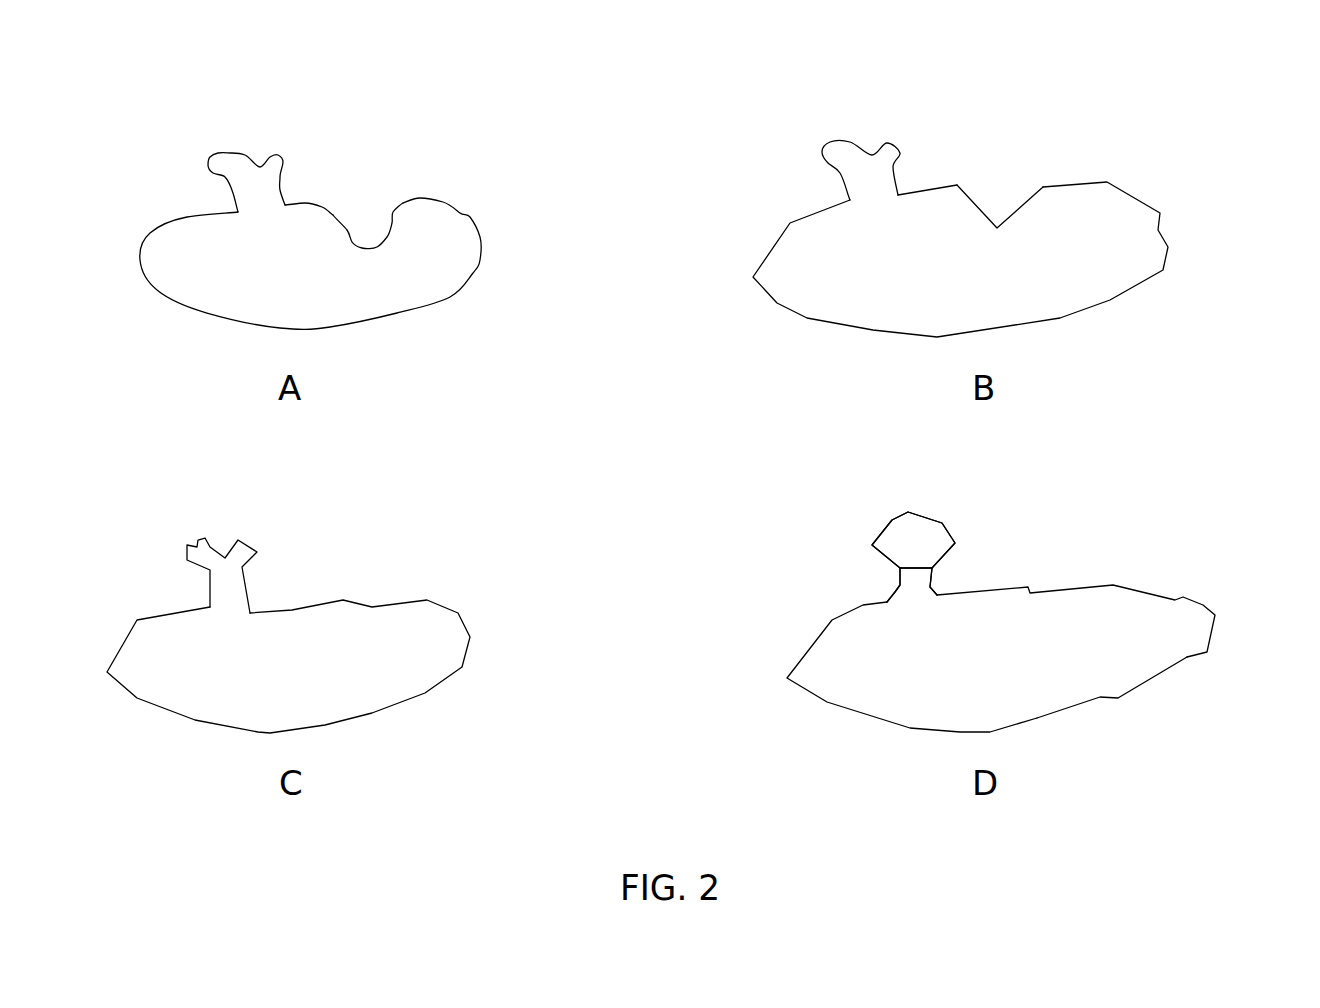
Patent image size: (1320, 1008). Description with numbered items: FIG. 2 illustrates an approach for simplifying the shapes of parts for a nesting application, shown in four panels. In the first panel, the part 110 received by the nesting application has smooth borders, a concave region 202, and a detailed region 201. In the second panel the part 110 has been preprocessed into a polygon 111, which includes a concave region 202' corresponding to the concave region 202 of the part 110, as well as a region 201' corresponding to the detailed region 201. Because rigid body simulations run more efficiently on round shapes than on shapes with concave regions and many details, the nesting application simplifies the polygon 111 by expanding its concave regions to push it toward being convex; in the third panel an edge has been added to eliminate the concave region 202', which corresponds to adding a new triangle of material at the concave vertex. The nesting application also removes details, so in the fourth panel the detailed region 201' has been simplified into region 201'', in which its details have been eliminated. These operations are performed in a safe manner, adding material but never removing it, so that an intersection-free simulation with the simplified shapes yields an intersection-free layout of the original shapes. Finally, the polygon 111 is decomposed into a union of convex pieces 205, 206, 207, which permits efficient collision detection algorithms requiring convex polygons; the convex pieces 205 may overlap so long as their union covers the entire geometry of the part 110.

The detailed region 201 is at (266, 154).
The concave region 202 is at (373, 196).
The part 110 is at (467, 217).
The region corresponding to the detailed region 201' is at (562, 348).
The concave region of the polygon 202' is at (1002, 172).
The polygon 111 is at (1160, 213).
The simplified region 201'' is at (959, 540).
The convex piece 207 is at (893, 537).
The convex piece 206 is at (910, 585).
The convex piece 205 is at (1113, 673).